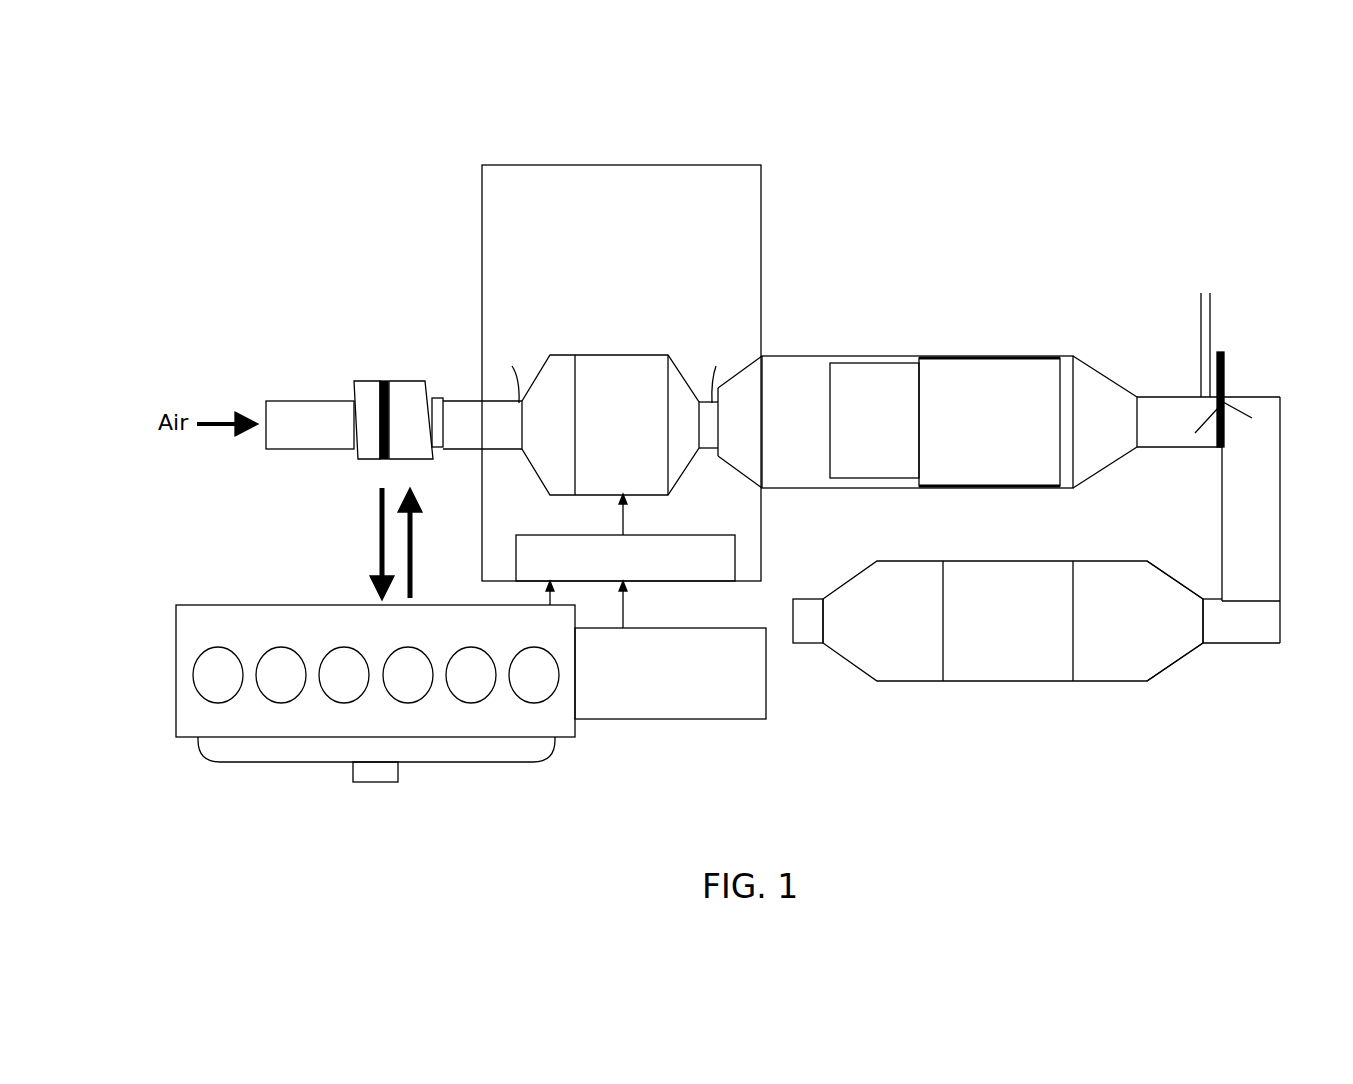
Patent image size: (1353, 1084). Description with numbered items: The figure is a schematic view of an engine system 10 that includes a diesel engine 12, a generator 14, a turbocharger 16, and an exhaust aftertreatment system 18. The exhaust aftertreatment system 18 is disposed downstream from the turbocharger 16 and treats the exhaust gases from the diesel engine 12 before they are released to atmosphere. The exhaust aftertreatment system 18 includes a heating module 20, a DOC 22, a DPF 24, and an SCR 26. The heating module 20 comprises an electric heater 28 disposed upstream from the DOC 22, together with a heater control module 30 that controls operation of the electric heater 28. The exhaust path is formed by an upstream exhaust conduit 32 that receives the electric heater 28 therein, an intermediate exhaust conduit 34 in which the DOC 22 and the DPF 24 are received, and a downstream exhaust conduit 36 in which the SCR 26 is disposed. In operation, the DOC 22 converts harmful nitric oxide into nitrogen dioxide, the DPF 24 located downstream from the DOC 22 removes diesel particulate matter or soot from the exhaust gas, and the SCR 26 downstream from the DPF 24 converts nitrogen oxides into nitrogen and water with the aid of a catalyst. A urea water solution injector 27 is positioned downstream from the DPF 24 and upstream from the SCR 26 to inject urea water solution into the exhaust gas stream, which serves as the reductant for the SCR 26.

The engine system 10 is at (1156, 136).
The diesel engine 12 is at (176, 650).
The generator 14 is at (717, 720).
The turbocharger 16 is at (366, 380).
The exhaust aftertreatment system 18 is at (987, 214).
The heating module 20 is at (628, 165).
The DOC 22 is at (853, 363).
The DPF 24 is at (990, 355).
The SCR 26 is at (1003, 683).
The urea water solution injector 27 is at (1211, 332).
The electric heater 28 is at (662, 365).
The heater control module 30 is at (735, 563).
The upstream exhaust conduit 32 is at (547, 355).
The intermediate exhaust conduit 34 is at (778, 355).
The downstream exhaust conduit 36 is at (1102, 683).